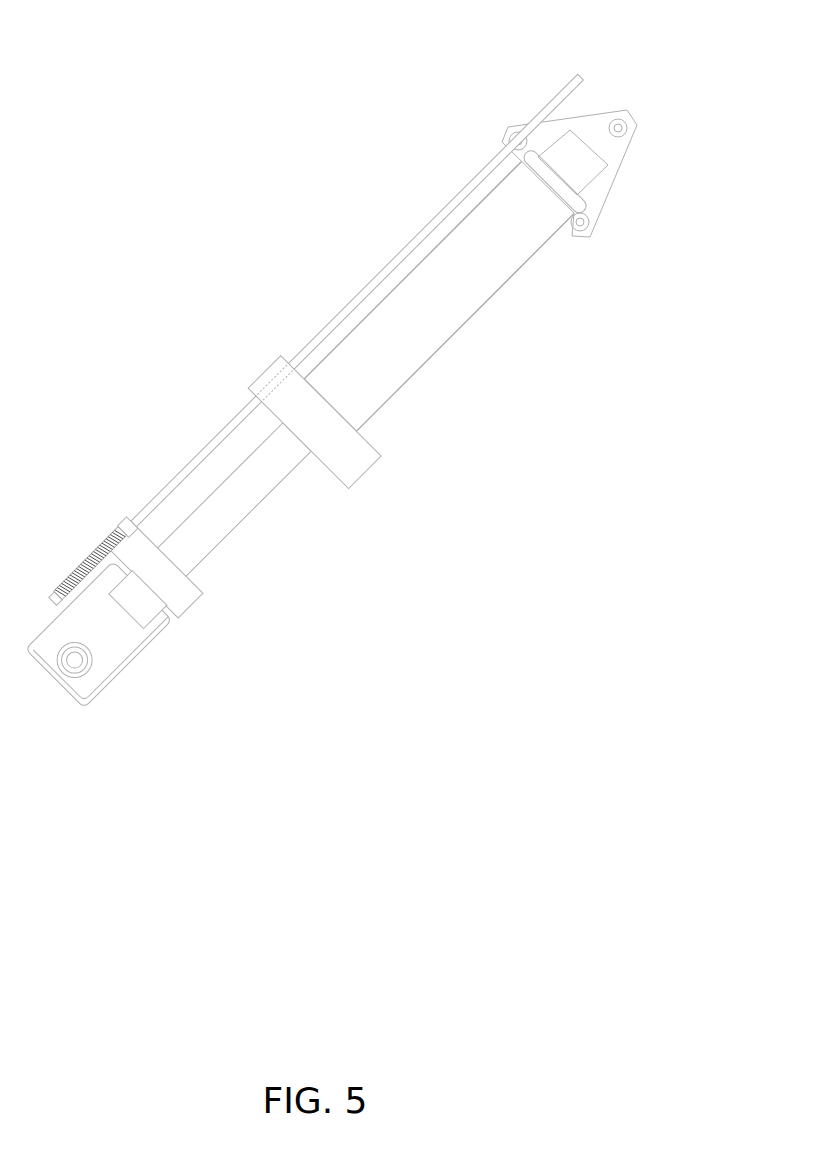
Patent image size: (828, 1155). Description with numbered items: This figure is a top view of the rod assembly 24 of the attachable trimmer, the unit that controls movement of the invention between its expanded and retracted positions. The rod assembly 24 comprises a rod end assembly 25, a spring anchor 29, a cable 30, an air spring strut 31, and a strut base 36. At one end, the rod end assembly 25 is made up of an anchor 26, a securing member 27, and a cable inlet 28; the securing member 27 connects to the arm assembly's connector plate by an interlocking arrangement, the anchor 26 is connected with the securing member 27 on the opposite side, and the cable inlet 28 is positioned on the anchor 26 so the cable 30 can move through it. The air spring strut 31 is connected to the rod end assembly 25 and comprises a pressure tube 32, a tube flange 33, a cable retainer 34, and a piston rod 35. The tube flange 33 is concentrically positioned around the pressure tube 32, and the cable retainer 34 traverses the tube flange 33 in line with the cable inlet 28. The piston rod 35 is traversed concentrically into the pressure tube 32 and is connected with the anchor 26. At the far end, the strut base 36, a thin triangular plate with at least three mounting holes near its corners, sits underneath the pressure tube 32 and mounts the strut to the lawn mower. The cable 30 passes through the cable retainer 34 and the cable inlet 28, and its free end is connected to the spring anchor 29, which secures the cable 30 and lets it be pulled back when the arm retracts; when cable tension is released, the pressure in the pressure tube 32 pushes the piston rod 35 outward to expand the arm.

The rod assembly 24 is at (420, 561).
The rod end assembly 25 is at (172, 649).
The anchor 26 is at (188, 600).
The securing member 27 is at (100, 672).
The cable inlet 28 is at (128, 525).
The spring anchor 29 is at (90, 563).
The cable 30 is at (552, 108).
The air spring strut 31 is at (500, 324).
The pressure tube 32 is at (527, 242).
The tube flange 33 is at (360, 458).
The cable retainer 34 is at (279, 377).
The piston rod 35 is at (257, 492).
The strut base 36 is at (615, 150).